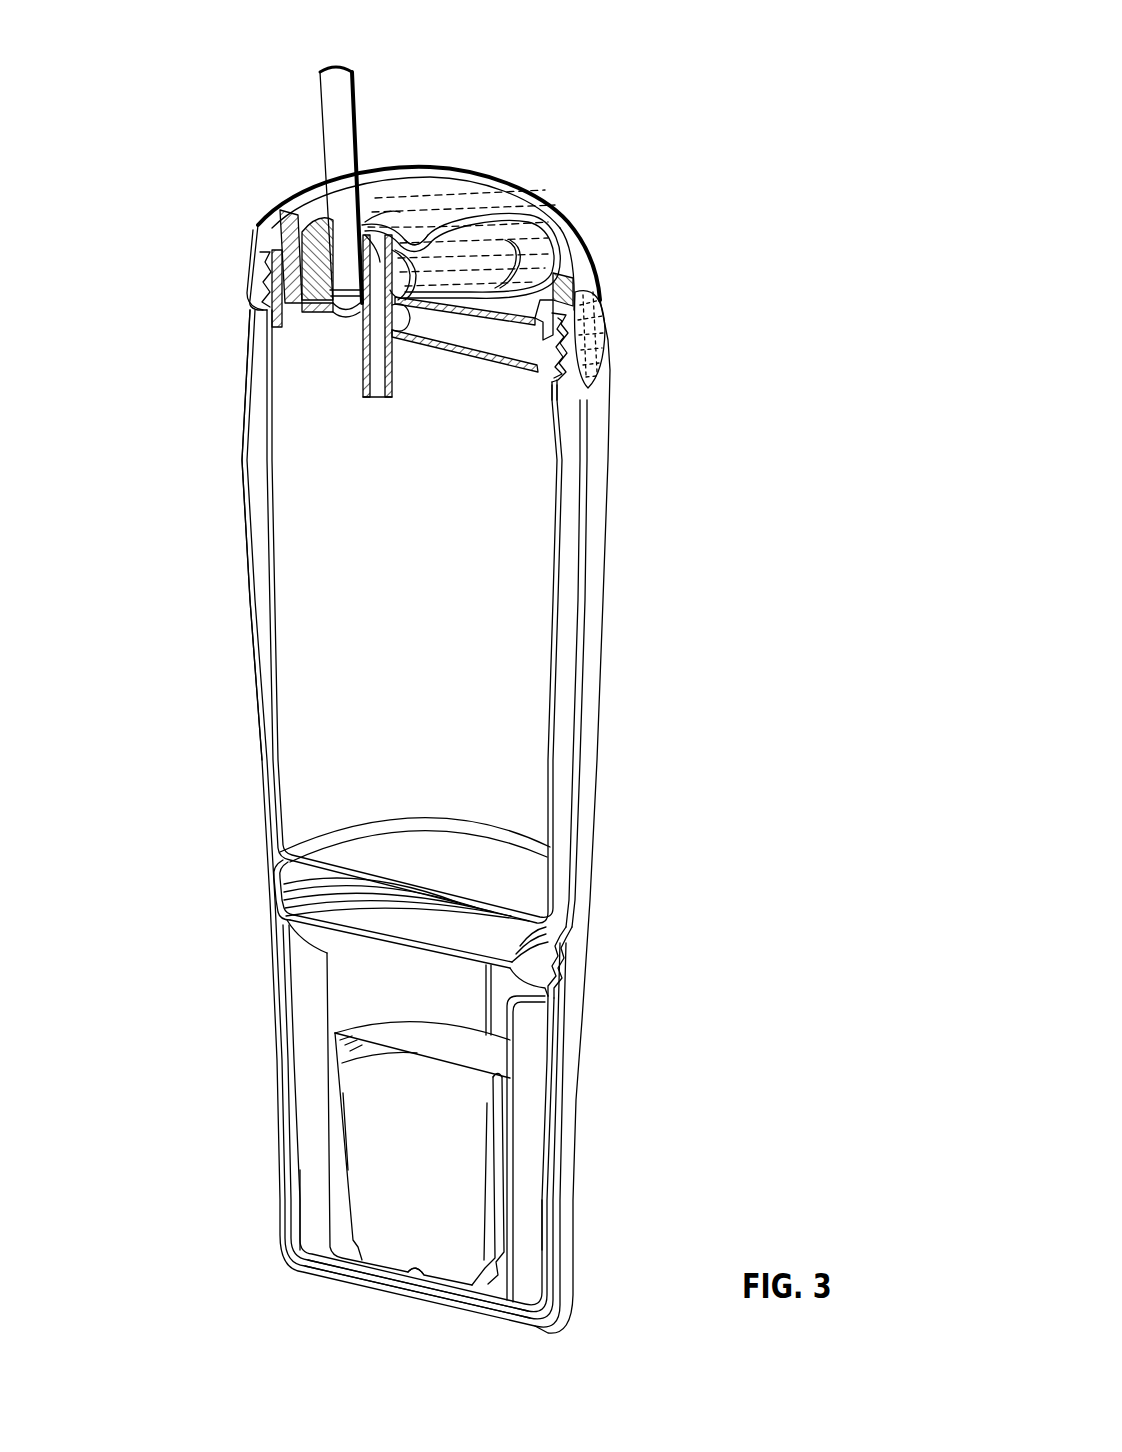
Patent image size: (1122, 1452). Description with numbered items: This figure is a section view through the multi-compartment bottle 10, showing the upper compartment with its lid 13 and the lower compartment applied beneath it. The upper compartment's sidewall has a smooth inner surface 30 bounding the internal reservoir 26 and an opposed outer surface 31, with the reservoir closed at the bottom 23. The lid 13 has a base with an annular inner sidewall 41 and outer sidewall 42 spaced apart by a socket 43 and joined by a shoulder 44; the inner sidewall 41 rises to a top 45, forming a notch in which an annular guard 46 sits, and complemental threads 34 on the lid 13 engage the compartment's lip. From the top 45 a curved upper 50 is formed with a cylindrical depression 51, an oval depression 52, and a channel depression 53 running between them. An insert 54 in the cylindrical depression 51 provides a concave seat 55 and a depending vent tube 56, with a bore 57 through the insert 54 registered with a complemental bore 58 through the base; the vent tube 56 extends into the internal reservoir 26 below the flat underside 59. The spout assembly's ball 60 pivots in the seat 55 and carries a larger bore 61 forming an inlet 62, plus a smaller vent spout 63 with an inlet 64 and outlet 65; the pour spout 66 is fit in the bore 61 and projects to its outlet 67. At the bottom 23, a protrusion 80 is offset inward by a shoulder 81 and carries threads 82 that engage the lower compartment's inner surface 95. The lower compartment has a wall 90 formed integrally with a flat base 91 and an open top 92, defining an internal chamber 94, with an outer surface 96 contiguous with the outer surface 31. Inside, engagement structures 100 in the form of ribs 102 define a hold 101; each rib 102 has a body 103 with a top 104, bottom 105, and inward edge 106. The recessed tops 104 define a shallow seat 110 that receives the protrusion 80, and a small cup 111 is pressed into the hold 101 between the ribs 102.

The multi-compartment bottle 10 is at (712, 188).
The lid 13 is at (575, 166).
The bottom 23 is at (594, 925).
The internal reservoir 26 is at (512, 618).
The inner surface 30 is at (277, 590).
The outer surface 31 is at (247, 590).
The complemental threads 34 is at (586, 393).
The inner sidewall 41 is at (542, 342).
The outer sidewall 42 is at (598, 345).
The socket 43 is at (557, 388).
The shoulder 44 is at (577, 290).
The top 45 is at (556, 230).
The annular guard 46 is at (272, 205).
The curved upper 50 is at (421, 205).
The cylindrical depression 51 is at (381, 208).
The oval depression 52 is at (518, 222).
The channel depression 53 is at (427, 235).
The insert 54 is at (298, 284).
The concave seat 55 is at (327, 312).
The vent tube 56 is at (388, 365).
The bore 57 is at (347, 337).
The complemental bore 58 is at (331, 325).
The underside 59 is at (498, 352).
The ball 60 is at (318, 240).
The bore 61 is at (300, 240).
The inlet 62 is at (268, 300).
The vent spout 63 is at (398, 265).
The inlet 64 is at (406, 318).
The outlet 65 is at (375, 222).
The pour spout 66 is at (318, 92).
The outlet 67 is at (338, 63).
The protrusion 80 is at (286, 922).
The shoulder 81 is at (560, 952).
The threads 82 is at (560, 975).
The wall 90 is at (578, 1185).
The base 91 is at (345, 1277).
The open top 92 is at (285, 890).
The internal chamber 94 is at (348, 972).
The inner surface 95 is at (425, 993).
The outer surface 96 is at (568, 1110).
The engagement structures 100 is at (317, 1116).
The hold 101 is at (466, 1024).
The ribs 102 is at (550, 948).
The body 103 is at (530, 1150).
The top 104 is at (531, 995).
The bottom 105 is at (515, 1300).
The inward edge 106 is at (500, 1282).
The seat 110 is at (278, 890).
The cup 111 is at (343, 1093).